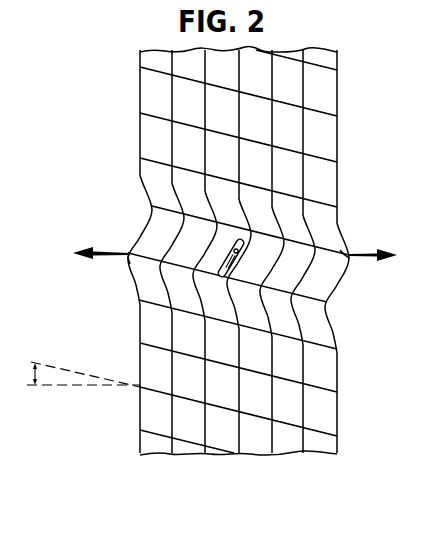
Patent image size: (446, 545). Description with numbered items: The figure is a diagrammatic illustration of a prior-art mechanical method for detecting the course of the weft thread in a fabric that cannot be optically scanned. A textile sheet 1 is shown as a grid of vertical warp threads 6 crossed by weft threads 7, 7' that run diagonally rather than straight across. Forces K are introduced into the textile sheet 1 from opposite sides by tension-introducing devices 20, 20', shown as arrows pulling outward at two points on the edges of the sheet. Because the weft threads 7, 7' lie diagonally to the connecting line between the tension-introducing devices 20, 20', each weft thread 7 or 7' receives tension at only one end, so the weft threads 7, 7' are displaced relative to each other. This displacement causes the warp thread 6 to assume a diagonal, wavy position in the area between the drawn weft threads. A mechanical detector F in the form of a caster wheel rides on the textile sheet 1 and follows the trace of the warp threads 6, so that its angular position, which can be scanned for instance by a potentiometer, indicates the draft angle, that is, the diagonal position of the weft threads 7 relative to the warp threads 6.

The textile sheet 1 is at (224, 277).
The warp thread 6 is at (171, 443).
The weft thread 7 is at (245, 290).
The weft thread 7' is at (347, 251).
The tension-introducing device 20 is at (355, 225).
The tension-introducing device 20' is at (104, 275).
The mechanical detector F is at (222, 263).
The forces K is at (235, 242).